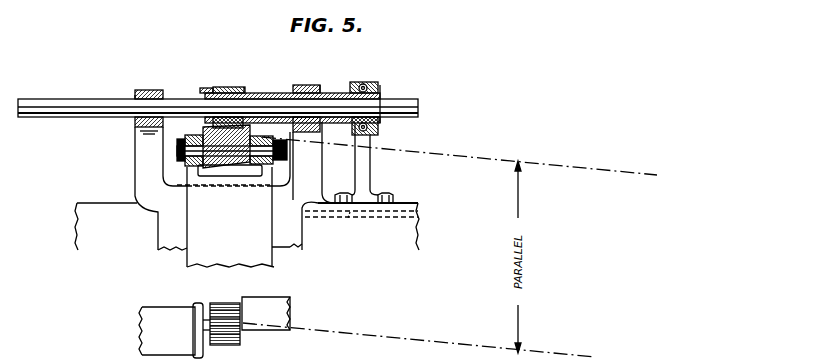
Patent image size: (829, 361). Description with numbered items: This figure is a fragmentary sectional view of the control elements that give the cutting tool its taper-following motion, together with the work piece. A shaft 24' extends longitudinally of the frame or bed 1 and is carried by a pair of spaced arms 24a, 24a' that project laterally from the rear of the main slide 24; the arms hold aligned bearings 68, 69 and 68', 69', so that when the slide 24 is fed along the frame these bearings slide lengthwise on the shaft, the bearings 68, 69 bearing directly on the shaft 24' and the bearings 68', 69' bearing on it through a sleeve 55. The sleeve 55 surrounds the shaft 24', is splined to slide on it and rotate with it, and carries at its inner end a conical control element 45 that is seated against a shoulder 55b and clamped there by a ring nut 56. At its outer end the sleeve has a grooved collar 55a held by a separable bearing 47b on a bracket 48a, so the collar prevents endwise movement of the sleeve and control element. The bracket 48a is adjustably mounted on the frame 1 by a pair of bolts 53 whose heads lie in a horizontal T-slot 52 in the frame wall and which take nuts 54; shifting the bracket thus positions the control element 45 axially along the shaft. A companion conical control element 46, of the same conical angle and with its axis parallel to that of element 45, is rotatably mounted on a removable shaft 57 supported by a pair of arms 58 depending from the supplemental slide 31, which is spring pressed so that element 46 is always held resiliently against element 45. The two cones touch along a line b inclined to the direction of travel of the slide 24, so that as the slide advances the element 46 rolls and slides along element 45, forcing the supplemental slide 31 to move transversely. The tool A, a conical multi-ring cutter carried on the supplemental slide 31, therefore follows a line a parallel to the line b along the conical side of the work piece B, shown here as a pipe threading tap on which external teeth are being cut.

The shaft 24' is at (238, 99).
The slide 24 is at (295, 235).
The arm 24a is at (182, 188).
The arm 24a' is at (324, 160).
The frame 1 is at (419, 224).
The supplemental slide 31 is at (230, 217).
The control element 45 is at (229, 87).
The control element 46 is at (218, 172).
The bearing 47b is at (363, 83).
The bracket 48a is at (371, 163).
The T-slot 52 is at (400, 216).
The bolts 53 is at (350, 213).
The nuts 54 is at (342, 193).
The sleeve 55 is at (280, 94).
The grooved collar 55a is at (381, 94).
The shoulder 55b is at (246, 92).
The ring nut 56 is at (203, 90).
The shaft 57 is at (243, 170).
The arms 58 is at (197, 172).
The bearing 68 is at (149, 100).
The bearing 68' is at (312, 78).
The bearing 69 is at (122, 90).
The bearing 69' is at (335, 82).
The tool A is at (217, 305).
The work piece B is at (230, 340).
The line a is at (396, 338).
The line b is at (482, 160).